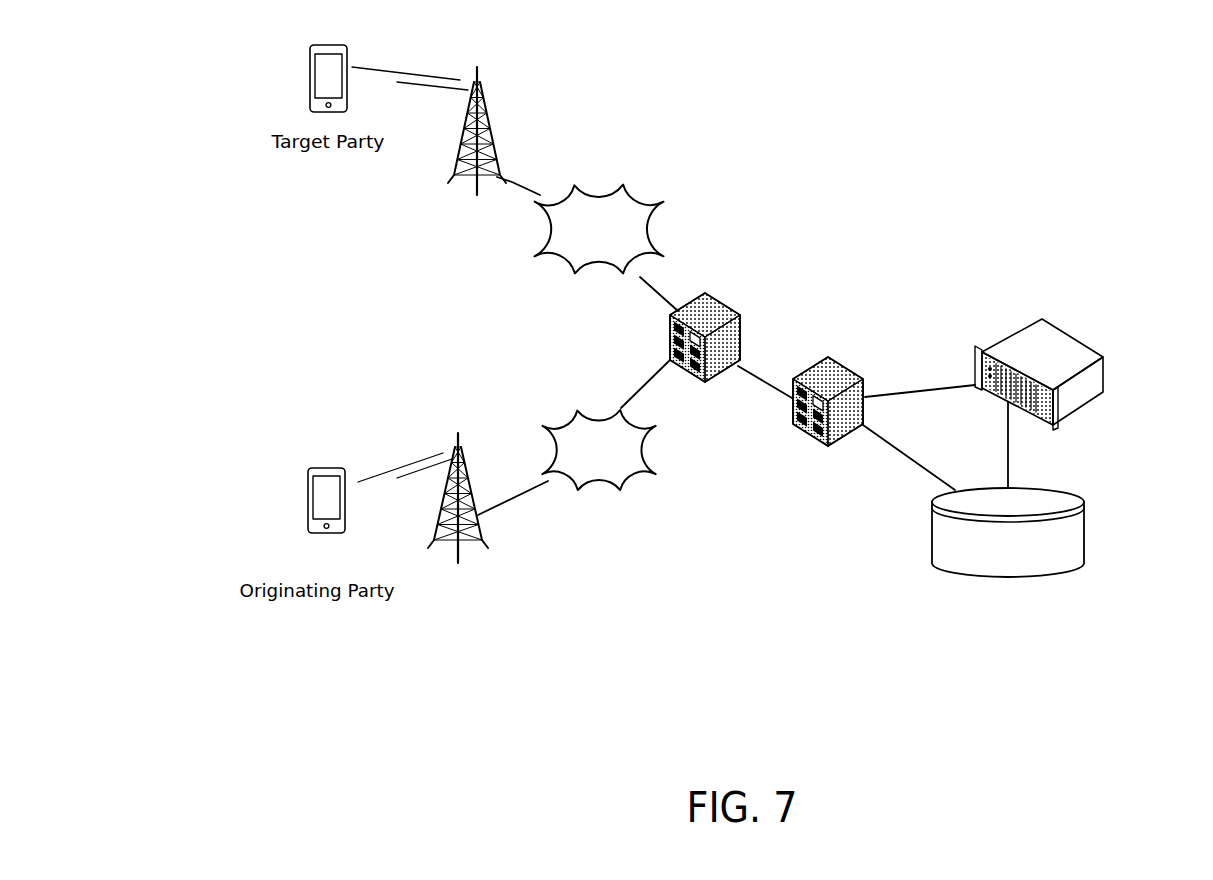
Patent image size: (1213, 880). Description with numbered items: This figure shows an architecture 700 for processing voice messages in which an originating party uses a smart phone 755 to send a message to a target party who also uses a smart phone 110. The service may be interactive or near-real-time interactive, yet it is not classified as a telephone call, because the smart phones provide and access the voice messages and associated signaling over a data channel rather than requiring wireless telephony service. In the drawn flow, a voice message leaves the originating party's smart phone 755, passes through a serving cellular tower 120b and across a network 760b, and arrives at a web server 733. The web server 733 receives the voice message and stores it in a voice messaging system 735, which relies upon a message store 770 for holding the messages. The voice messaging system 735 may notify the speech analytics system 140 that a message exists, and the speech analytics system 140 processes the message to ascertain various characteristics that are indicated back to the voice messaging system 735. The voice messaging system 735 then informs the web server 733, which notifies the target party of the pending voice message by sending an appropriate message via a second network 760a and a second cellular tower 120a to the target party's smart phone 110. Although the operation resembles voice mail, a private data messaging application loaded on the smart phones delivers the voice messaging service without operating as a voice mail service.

The architecture 700 is at (972, 141).
The target party smart phone 110 is at (318, 44).
The cellular tower 120a is at (492, 128).
The serving cellular tower 120b is at (470, 480).
The network 760a is at (622, 262).
The network 760b is at (576, 478).
The web server 733 is at (725, 308).
The voice messaging system 735 is at (865, 386).
The speech analytics system 140 is at (1088, 348).
The message store 770 is at (992, 572).
The originating party smart phone 755 is at (322, 538).